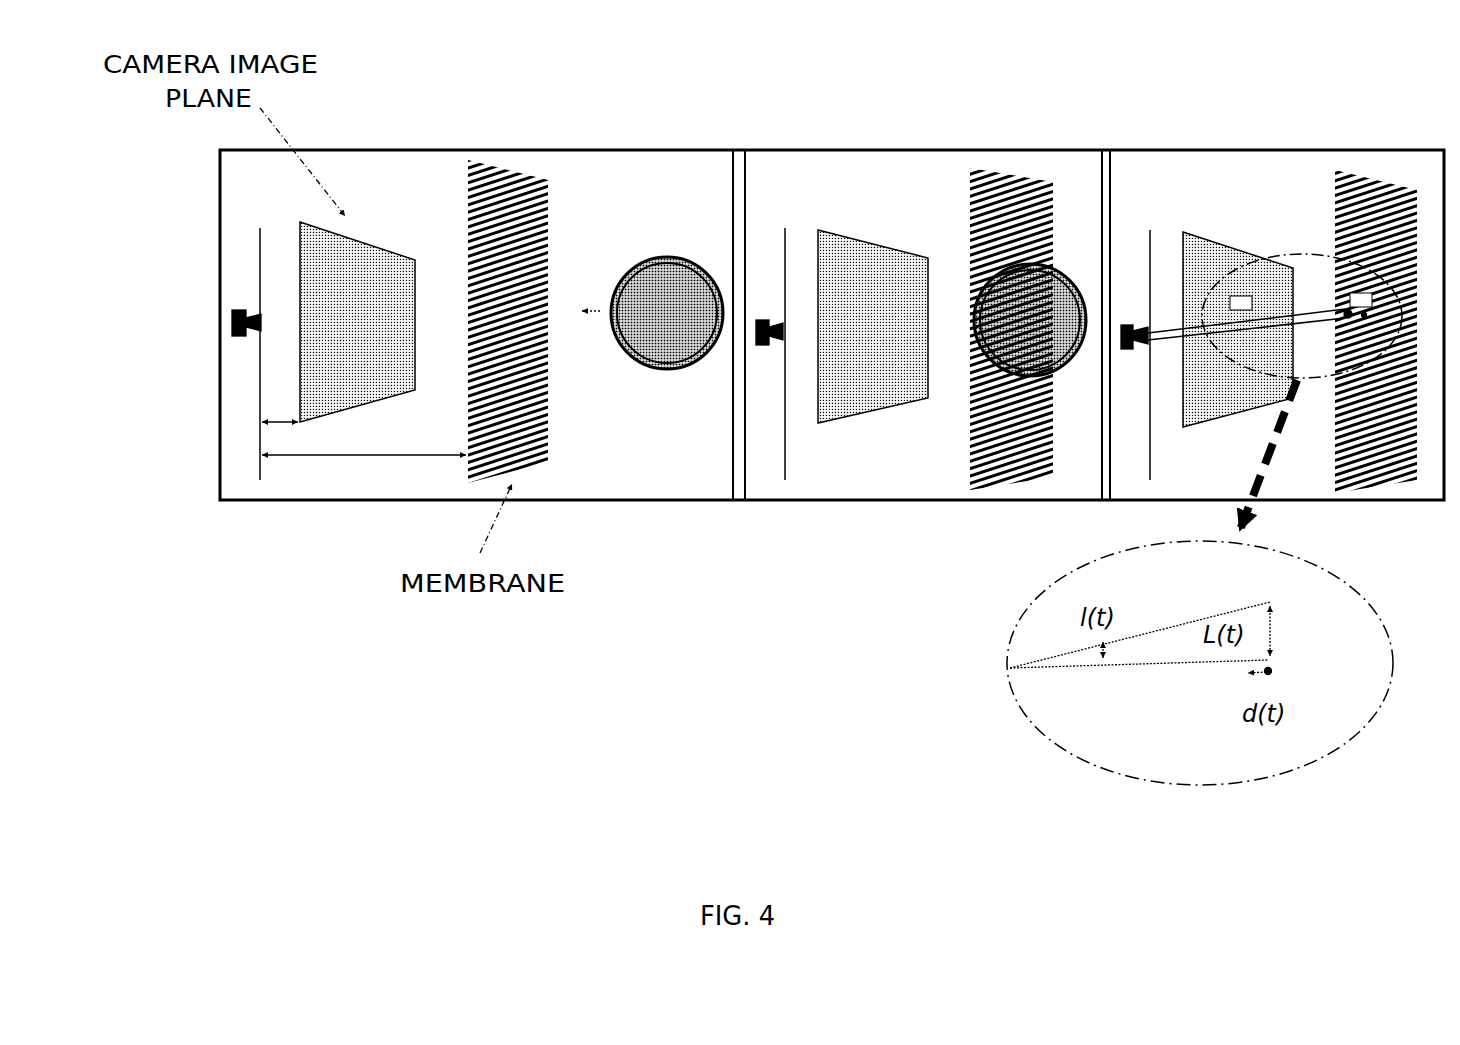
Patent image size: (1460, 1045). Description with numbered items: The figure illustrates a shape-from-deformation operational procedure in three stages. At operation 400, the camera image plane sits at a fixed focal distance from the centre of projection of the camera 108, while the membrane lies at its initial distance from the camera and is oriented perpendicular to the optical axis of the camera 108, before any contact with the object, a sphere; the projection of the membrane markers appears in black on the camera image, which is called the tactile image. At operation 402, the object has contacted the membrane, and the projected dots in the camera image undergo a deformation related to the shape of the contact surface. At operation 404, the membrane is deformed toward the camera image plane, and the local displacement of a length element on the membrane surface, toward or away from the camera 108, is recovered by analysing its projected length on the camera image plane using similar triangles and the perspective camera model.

The operation 400 is at (529, 139).
The operation 402 is at (929, 139).
The operation 404 is at (1302, 135).
The camera 108 is at (227, 331).